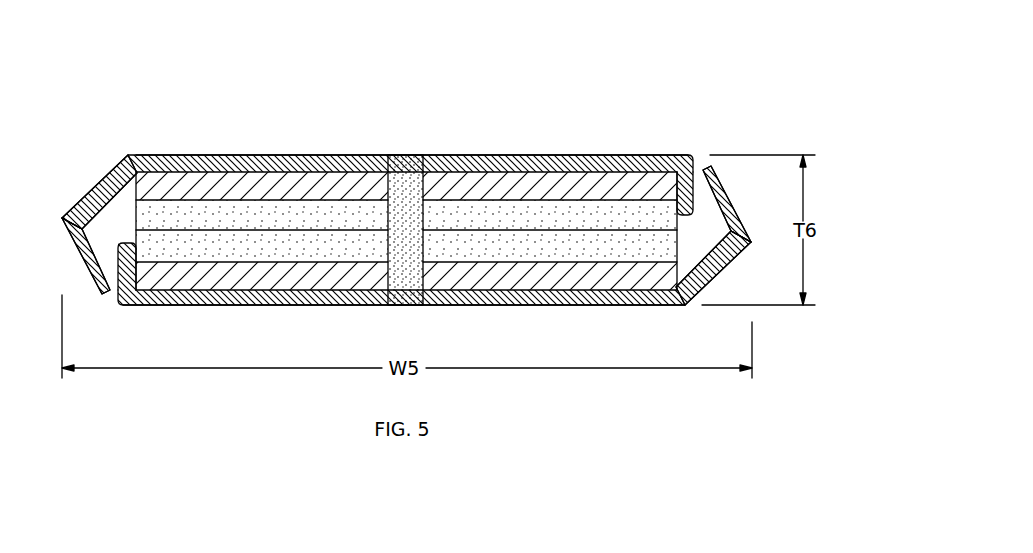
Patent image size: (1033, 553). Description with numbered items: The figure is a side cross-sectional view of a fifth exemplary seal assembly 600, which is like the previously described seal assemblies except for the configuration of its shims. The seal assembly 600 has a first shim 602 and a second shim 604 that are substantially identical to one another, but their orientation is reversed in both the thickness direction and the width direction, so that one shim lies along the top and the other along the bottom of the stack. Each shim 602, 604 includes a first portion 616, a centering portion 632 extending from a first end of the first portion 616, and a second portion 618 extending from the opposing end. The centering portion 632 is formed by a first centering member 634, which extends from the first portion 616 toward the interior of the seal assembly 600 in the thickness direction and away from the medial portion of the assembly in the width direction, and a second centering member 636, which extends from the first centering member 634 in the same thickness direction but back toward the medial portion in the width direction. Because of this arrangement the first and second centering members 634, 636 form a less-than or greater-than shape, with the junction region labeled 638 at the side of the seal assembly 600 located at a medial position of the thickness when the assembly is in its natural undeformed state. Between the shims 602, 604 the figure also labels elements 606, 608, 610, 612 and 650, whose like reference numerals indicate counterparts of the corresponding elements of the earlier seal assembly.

The seal assembly 600 is at (606, 69).
The first shim 602 is at (329, 162).
The second shim 604 is at (337, 297).
The first electrode layer 606 is at (273, 182).
The second electrode layer 608 is at (273, 277).
The first separator layer 610 is at (223, 217).
The second separator layer 612 is at (218, 247).
The first portion 616 is at (547, 155).
The second portion 618 is at (673, 203).
The centering portion 632 is at (101, 140).
The first centering member 634 is at (88, 197).
The second centering member 636 is at (85, 270).
The fold 638 is at (61, 218).
The center seam 650 is at (407, 163).